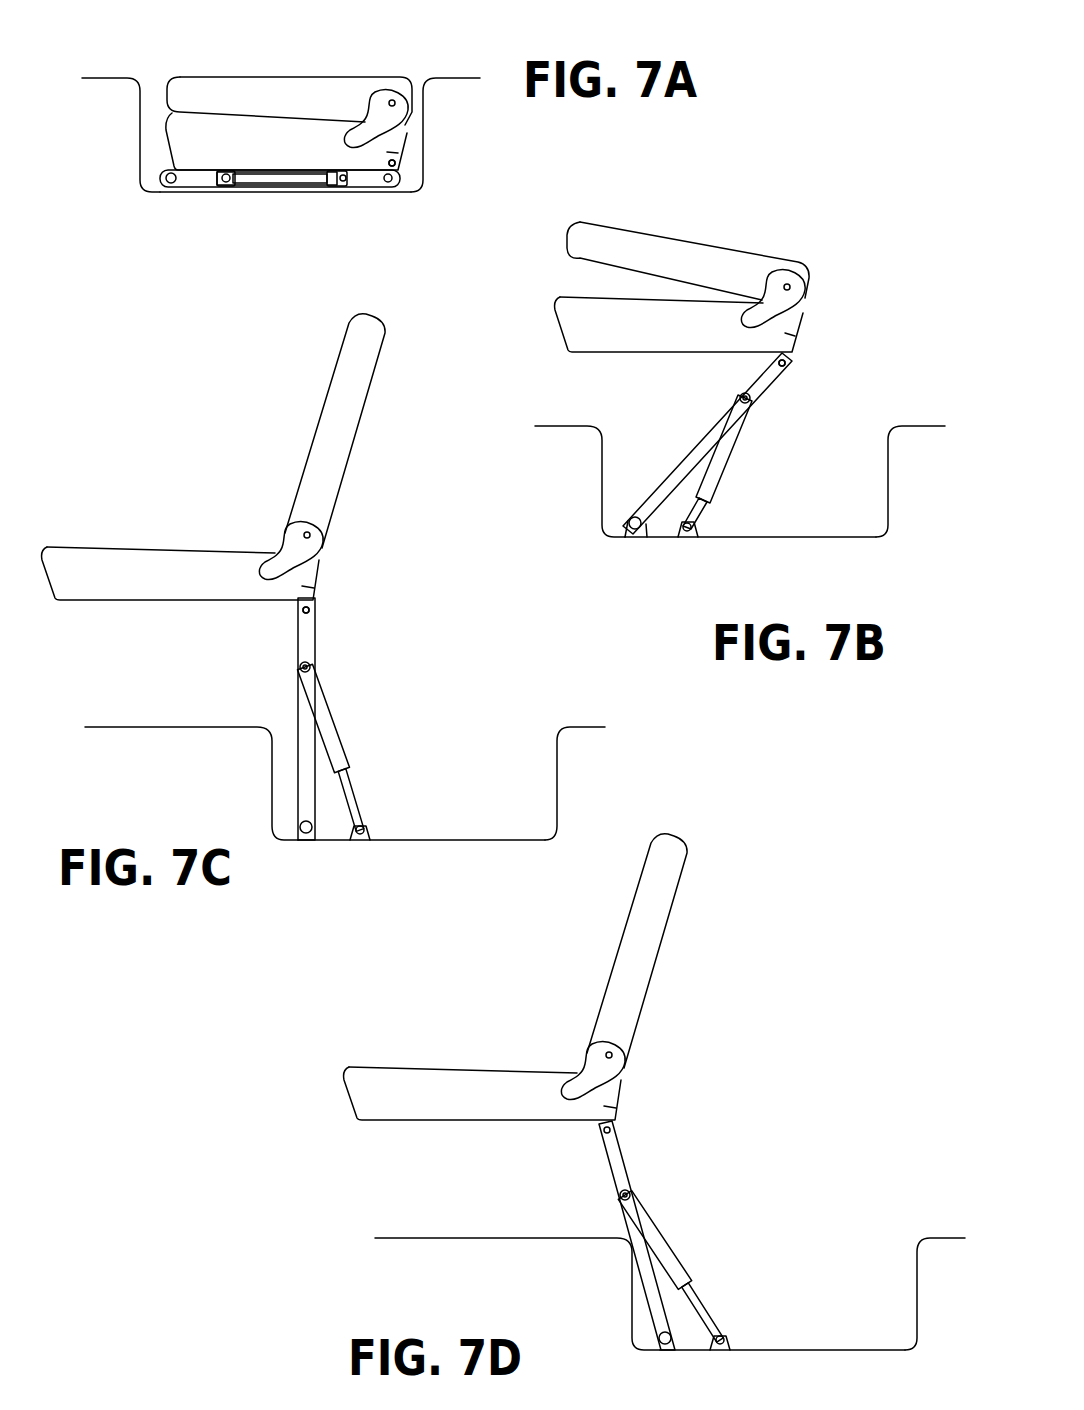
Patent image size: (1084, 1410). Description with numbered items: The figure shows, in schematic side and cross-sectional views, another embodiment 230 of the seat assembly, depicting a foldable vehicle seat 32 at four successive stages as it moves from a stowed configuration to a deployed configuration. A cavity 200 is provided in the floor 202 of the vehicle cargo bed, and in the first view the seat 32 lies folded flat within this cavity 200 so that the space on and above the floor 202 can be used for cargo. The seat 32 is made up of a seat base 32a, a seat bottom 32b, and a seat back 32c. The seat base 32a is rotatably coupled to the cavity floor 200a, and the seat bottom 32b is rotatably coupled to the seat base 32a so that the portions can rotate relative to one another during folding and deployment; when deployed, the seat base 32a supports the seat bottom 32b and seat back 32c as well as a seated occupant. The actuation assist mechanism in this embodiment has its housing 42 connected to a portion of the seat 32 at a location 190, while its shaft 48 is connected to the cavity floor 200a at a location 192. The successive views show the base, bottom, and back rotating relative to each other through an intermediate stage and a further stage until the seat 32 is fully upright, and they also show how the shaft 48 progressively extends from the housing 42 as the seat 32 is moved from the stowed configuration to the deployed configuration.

In FIG. 7A, the seat assembly embodiment 230 is at (190, 72).
In FIG. 7B, the seat assembly embodiment 230 is at (580, 207).
In FIG. 7C, the seat assembly embodiment 230 is at (410, 350).
In FIG. 7D, the seat assembly embodiment 230 is at (740, 876).
In FIG. 7A, the foldable vehicle seat 32 is at (305, 87).
In FIG. 7B, the foldable vehicle seat 32 is at (728, 258).
In FIG. 7C, the foldable vehicle seat 32 is at (346, 396).
In FIG. 7D, the foldable vehicle seat 32 is at (646, 926).
In FIG. 7A, the seat base 32a is at (375, 184).
In FIG. 7B, the seat base 32a is at (680, 473).
In FIG. 7C, the seat base 32a is at (300, 735).
In FIG. 7D, the seat base 32a is at (630, 1240).
In FIG. 7A, the seat bottom 32b is at (396, 165).
In FIG. 7B, the seat bottom 32b is at (788, 345).
In FIG. 7C, the seat bottom 32b is at (310, 590).
In FIG. 7A, the seat back 32c is at (356, 76).
In FIG. 7B, the seat back 32c is at (770, 256).
In FIG. 7C, the seat back 32c is at (360, 446).
In FIG. 7D, the seat back 32c is at (662, 972).
In FIG. 7A, the housing 42 is at (315, 182).
In FIG. 7B, the housing 42 is at (740, 420).
In FIG. 7C, the housing 42 is at (320, 704).
In FIG. 7D, the housing 42 is at (652, 1238).
In FIG. 7A, the shaft 48 is at (226, 178).
In FIG. 7B, the shaft 48 is at (712, 504).
In FIG. 7C, the shaft 48 is at (344, 782).
In FIG. 7D, the shaft 48 is at (700, 1306).
In FIG. 7B, the location 190 is at (752, 404).
In FIG. 7C, the location 190 is at (312, 670).
In FIG. 7D, the location 190 is at (633, 1198).
In FIG. 7A, the location 192 is at (220, 183).
In FIG. 7B, the location 192 is at (680, 531).
In FIG. 7C, the location 192 is at (352, 834).
In FIG. 7D, the location 192 is at (714, 1344).
In FIG. 7A, the cavity 200 is at (264, 194).
In FIG. 7B, the cavity 200 is at (842, 540).
In FIG. 7C, the cavity 200 is at (460, 842).
In FIG. 7D, the cavity 200 is at (833, 1352).
In FIG. 7A, the cavity floor 200a is at (230, 194).
In FIG. 7B, the cavity floor 200a is at (721, 540).
In FIG. 7C, the cavity floor 200a is at (386, 842).
In FIG. 7D, the cavity floor 200a is at (776, 1352).
In FIG. 7A, the floor 202 is at (100, 82).
In FIG. 7B, the floor 202 is at (566, 430).
In FIG. 7C, the floor 202 is at (150, 730).
In FIG. 7D, the floor 202 is at (520, 1242).